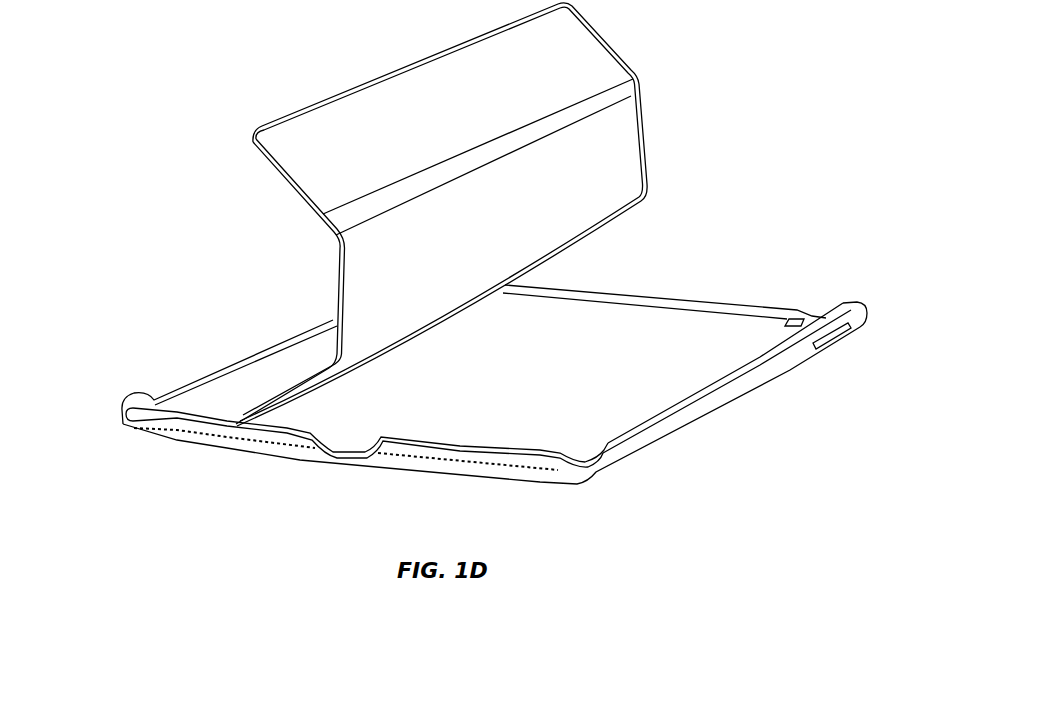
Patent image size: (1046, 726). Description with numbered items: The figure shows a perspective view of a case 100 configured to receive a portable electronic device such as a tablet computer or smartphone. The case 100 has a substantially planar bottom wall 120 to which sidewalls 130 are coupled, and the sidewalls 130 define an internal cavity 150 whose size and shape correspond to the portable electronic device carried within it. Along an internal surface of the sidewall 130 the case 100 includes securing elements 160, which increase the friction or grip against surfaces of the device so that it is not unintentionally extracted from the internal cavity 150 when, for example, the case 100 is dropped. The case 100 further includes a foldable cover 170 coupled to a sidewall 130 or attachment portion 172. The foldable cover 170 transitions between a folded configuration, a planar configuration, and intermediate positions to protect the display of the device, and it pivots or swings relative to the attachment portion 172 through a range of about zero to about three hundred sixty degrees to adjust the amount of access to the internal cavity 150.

The case 100 is at (237, 77).
The bottom wall 120 is at (500, 368).
The sidewall 130 is at (642, 445).
The internal cavity 150 is at (708, 328).
The securing elements 160 is at (493, 463).
The foldable cover 170 is at (323, 173).
The attachment portion 172 is at (128, 399).